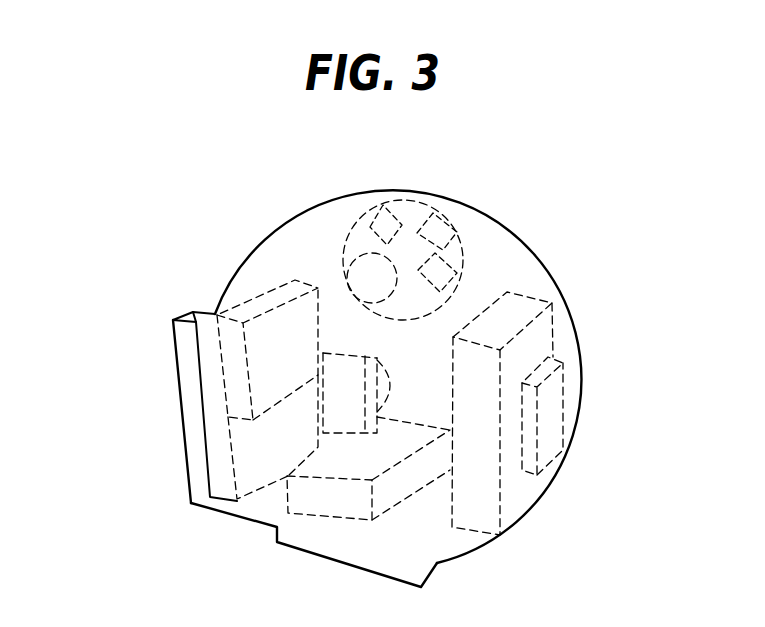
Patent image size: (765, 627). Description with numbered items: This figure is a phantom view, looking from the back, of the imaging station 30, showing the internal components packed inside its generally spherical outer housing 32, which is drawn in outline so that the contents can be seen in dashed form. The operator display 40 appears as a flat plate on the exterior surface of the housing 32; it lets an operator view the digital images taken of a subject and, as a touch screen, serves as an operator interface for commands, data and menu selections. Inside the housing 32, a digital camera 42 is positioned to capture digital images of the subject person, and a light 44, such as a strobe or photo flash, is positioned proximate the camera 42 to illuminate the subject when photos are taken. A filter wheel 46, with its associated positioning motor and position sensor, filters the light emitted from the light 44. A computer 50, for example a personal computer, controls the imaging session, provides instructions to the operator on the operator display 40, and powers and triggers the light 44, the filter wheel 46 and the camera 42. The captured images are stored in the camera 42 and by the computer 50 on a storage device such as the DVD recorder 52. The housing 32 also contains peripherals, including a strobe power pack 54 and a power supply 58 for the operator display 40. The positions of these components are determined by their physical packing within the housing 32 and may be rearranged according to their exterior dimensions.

The imaging station 30 is at (152, 407).
The outer housing 32 is at (524, 230).
The operator display 40 is at (173, 313).
The digital camera 42 is at (345, 355).
The light 44 is at (355, 275).
The filter wheel 46 is at (482, 218).
The computer 50 is at (523, 297).
The DVD recorder 52 is at (243, 275).
The strobe power pack 54 is at (335, 500).
The power supply 58 is at (555, 402).